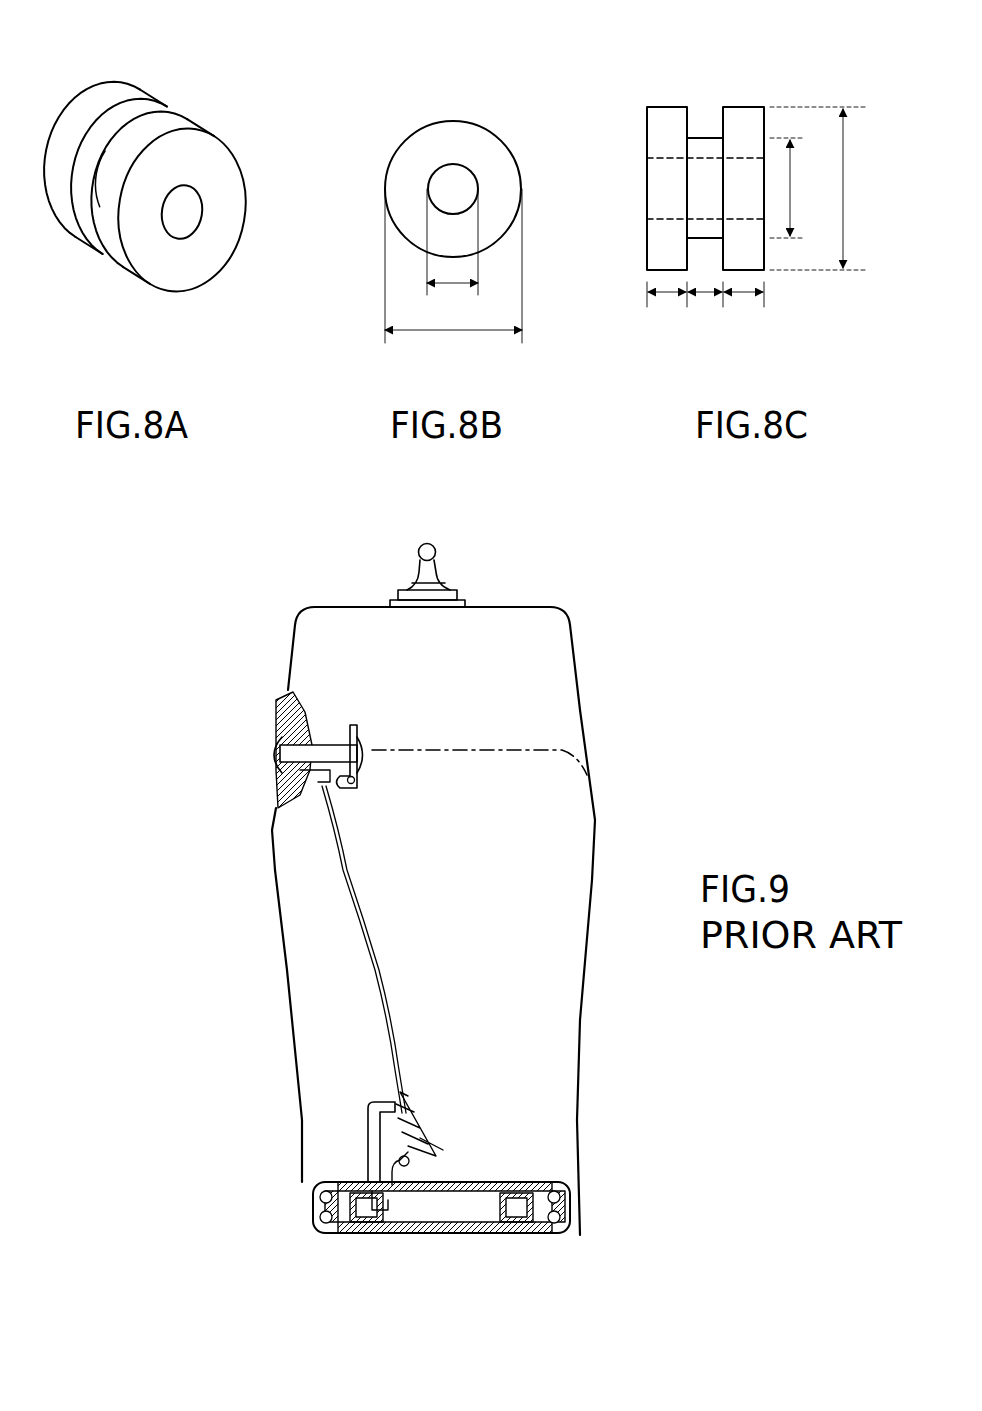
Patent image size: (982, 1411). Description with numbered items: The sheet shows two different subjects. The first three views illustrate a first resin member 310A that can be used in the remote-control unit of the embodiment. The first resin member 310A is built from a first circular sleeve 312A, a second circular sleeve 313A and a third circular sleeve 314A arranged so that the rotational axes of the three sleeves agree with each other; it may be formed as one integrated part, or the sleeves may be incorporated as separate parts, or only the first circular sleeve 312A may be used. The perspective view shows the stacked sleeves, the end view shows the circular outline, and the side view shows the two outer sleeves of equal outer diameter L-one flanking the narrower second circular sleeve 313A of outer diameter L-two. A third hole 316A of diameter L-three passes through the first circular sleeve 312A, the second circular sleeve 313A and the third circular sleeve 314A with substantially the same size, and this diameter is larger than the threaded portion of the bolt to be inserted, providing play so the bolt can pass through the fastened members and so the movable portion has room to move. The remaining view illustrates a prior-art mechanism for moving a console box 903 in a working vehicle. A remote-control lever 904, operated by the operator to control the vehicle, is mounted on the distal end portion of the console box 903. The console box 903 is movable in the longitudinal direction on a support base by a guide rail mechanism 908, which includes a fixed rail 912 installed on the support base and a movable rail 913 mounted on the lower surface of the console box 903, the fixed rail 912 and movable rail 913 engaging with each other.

In FIG. 8A, the first resin member 310A is at (173, 187).
In FIG. 8B, the first resin member 310A is at (495, 202).
In FIG. 8C, the first resin member 310A is at (761, 175).
In FIG. 8A, the first circular sleeve 312A is at (113, 280).
In FIG. 8C, the first circular sleeve 312A is at (746, 107).
In FIG. 8C, the second circular sleeve 313A is at (703, 138).
In FIG. 8A, the third circular sleeve 314A is at (63, 255).
In FIG. 8C, the third circular sleeve 314A is at (665, 107).
In FIG. 8A, the third hole 316A is at (180, 211).
In FIG. 8B, the third hole 316A is at (474, 185).
In FIG. 9, the console box 903 is at (580, 712).
In FIG. 9, the remote-control lever 904 is at (437, 554).
In FIG. 9, the guide rail mechanism 908 is at (483, 1192).
In FIG. 9, the fixed rail 912 is at (362, 1233).
In FIG. 9, the movable rail 913 is at (463, 1180).